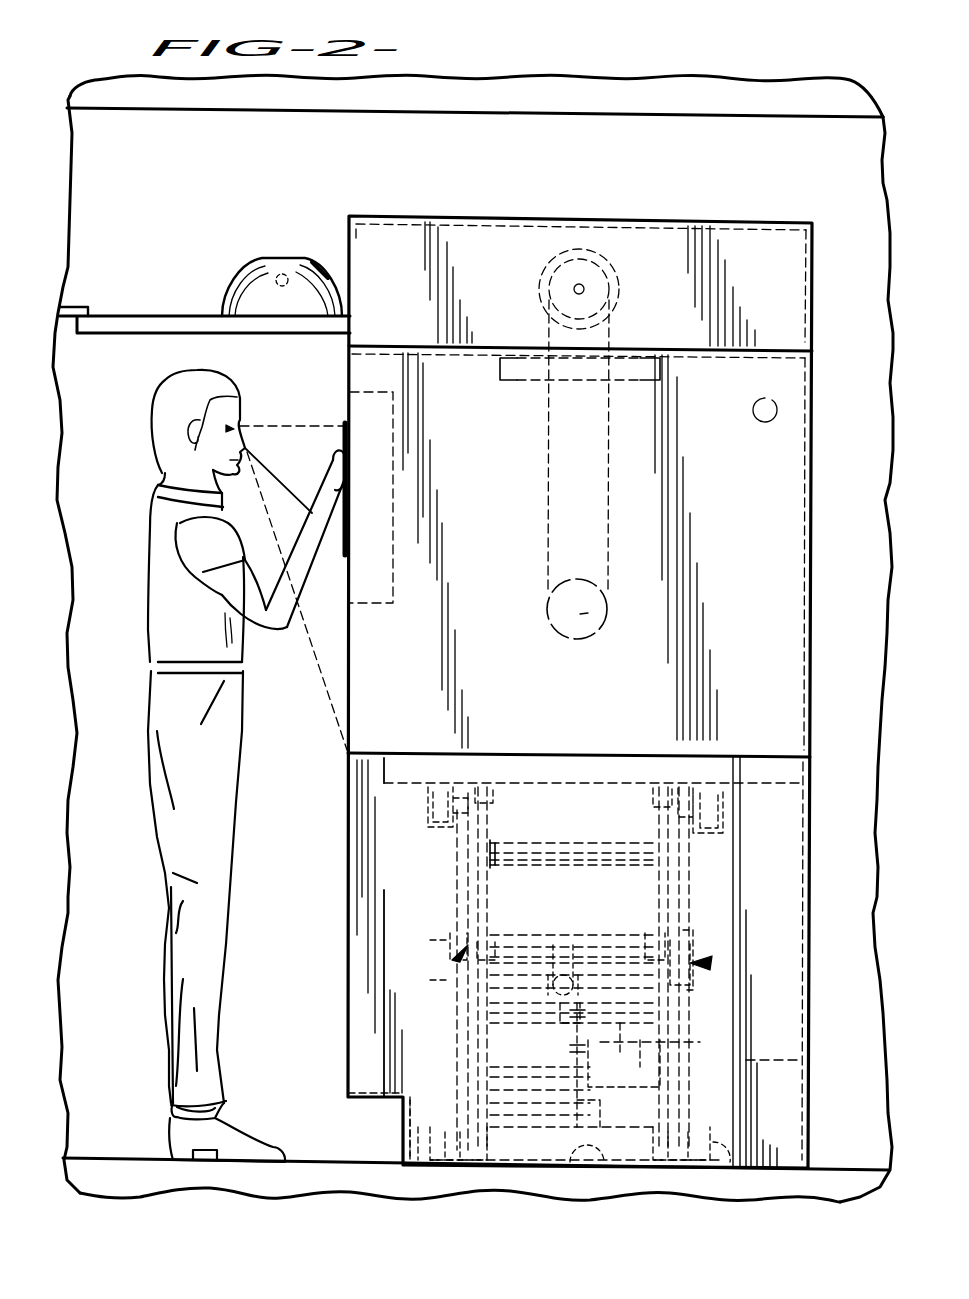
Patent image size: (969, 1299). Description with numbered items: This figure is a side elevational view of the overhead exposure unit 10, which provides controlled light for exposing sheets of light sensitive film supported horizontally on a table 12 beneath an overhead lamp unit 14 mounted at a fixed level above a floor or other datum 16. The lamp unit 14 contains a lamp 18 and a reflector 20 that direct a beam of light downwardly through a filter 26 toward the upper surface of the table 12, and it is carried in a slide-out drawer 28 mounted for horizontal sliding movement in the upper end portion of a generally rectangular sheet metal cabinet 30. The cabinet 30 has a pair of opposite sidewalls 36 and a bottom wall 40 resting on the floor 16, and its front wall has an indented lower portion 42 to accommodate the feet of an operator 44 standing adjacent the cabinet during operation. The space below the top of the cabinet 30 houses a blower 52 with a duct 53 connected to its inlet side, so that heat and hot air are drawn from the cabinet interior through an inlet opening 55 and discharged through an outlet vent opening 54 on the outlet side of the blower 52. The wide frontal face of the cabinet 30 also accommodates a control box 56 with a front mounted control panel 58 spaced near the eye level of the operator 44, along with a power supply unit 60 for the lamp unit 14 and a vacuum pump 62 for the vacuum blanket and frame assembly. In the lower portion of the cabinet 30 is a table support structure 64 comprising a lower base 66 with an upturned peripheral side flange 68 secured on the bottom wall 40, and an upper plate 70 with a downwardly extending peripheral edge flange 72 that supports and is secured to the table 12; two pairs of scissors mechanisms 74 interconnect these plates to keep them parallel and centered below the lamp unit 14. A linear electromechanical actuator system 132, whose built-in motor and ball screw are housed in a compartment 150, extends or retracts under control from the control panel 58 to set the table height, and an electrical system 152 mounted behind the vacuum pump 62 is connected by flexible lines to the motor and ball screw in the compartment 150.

The overhead exposure unit 10 is at (310, 803).
The table 12 is at (785, 800).
The overhead lamp unit 14 is at (226, 300).
The floor 16 is at (115, 1162).
The lamp 18 is at (280, 272).
The reflector 20 is at (322, 270).
The filter 26 is at (652, 382).
The slide-out drawer 28 is at (58, 318).
The cabinet 30 is at (345, 990).
The sidewall 36 is at (552, 697).
The bottom wall 40 is at (424, 1168).
The indented lower portion 42 is at (403, 1138).
The operator 44 is at (148, 710).
The blower 52 is at (635, 283).
The duct 53 is at (610, 513).
The outlet vent opening 54 is at (580, 244).
The inlet opening 55 is at (609, 628).
The control box 56 is at (398, 610).
The control panel 58 is at (347, 520).
The power supply unit 60 is at (515, 925).
The vacuum pump 62 is at (492, 1148).
The table support structure 64 is at (690, 911).
The lower base 66 is at (588, 1166).
The peripheral side flange 68 is at (455, 1165).
The upper plate 70 is at (525, 795).
The peripheral edge flange 72 is at (432, 800).
The scissors mechanism 74 is at (430, 968).
The linear electromechanical actuator system 132 is at (597, 1042).
The compartment 150 is at (610, 1044).
The electrical system 152 is at (750, 1060).